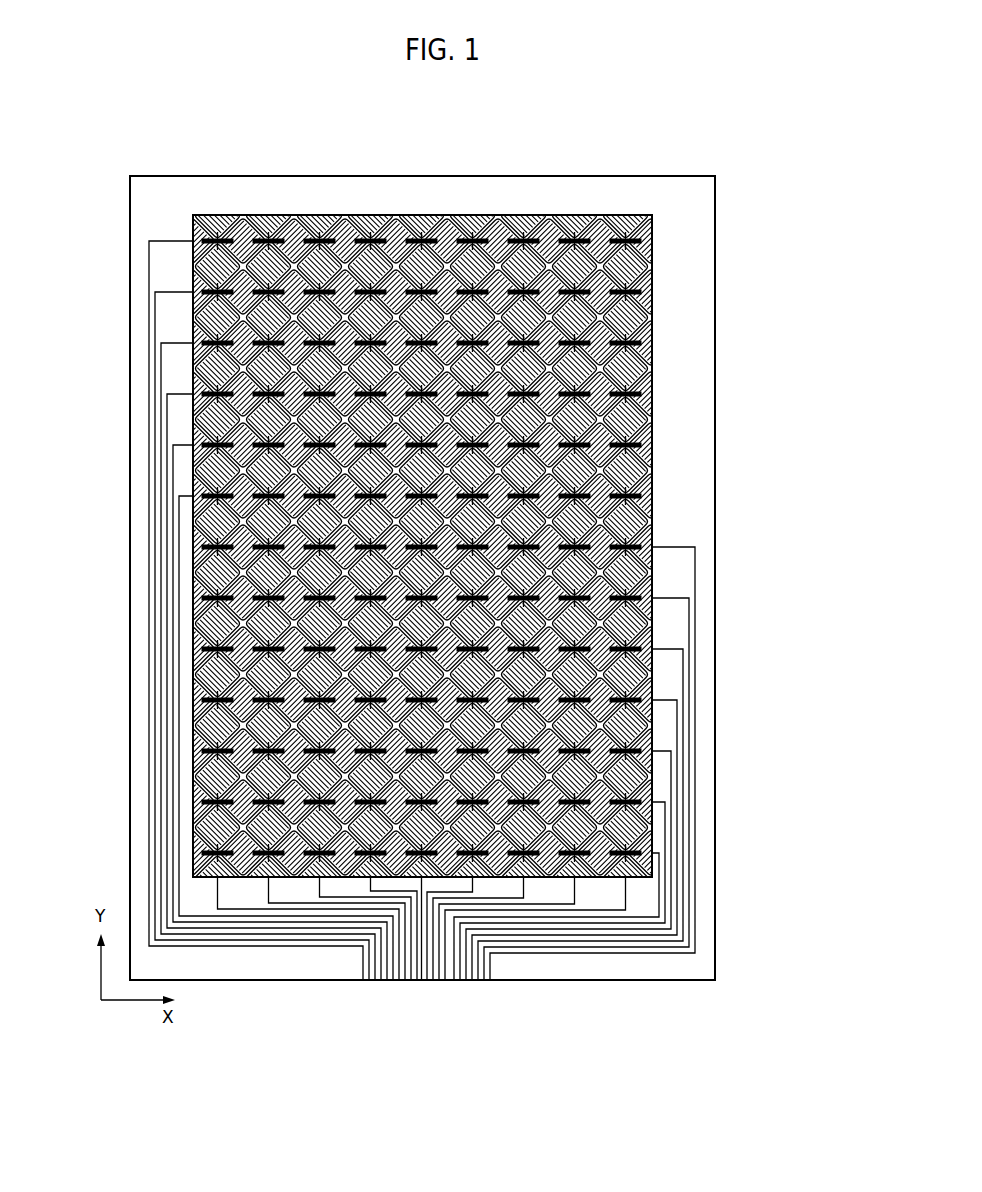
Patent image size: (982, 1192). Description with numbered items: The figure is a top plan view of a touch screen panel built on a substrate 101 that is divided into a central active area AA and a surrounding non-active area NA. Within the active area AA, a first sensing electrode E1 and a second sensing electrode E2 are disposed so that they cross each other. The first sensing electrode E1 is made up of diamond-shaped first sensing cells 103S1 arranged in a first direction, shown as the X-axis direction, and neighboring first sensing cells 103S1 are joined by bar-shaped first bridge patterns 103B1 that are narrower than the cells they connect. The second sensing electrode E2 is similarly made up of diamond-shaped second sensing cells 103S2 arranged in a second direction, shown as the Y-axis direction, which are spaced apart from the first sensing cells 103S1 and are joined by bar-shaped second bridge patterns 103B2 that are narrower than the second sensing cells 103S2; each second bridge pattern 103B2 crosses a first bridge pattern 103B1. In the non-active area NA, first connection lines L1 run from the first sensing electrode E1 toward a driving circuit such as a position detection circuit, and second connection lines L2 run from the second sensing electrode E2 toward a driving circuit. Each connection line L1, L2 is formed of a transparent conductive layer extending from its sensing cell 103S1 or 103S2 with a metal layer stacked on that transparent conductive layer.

The active area AA is at (594, 213).
The non-active area NA is at (694, 223).
The substrate 101 is at (716, 302).
The first sensing cells 103S1 is at (613, 423).
The first bridge patterns 103B1 is at (613, 446).
The second sensing cells 103S2 is at (617, 462).
The second bridge patterns 103B2 is at (617, 488).
The first sensing electrode E1 is at (488, 547).
The second sensing electrode E2 is at (501, 547).
The first connection lines L1 is at (151, 595).
The second connection lines L2 is at (548, 905).